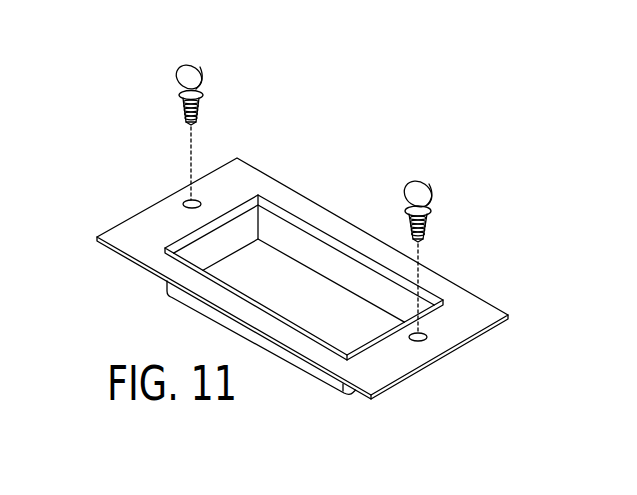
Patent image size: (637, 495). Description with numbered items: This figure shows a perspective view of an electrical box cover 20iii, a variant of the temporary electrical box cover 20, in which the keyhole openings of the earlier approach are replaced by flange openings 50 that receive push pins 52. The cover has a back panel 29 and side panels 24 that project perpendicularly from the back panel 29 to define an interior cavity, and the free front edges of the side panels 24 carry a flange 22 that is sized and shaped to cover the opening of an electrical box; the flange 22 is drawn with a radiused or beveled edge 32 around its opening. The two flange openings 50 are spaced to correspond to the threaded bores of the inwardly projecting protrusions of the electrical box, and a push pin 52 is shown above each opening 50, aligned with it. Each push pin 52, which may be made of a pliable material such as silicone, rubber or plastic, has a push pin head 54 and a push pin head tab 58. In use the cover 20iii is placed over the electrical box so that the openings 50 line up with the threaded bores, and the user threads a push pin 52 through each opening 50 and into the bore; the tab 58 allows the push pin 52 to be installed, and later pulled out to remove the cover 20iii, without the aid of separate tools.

The electrical box cover 20 is at (275, 233).
The electrical box cover 20iii is at (348, 163).
The flange 22 is at (133, 228).
The side walls/panels 24 is at (182, 297).
The back panel/base 29 is at (310, 303).
The radiused or beveled edge 32 is at (327, 237).
The flange openings 50 is at (185, 203).
The push pin 52 is at (177, 94).
The push pin head 54 is at (208, 97).
The push pin head tab 58 is at (203, 75).